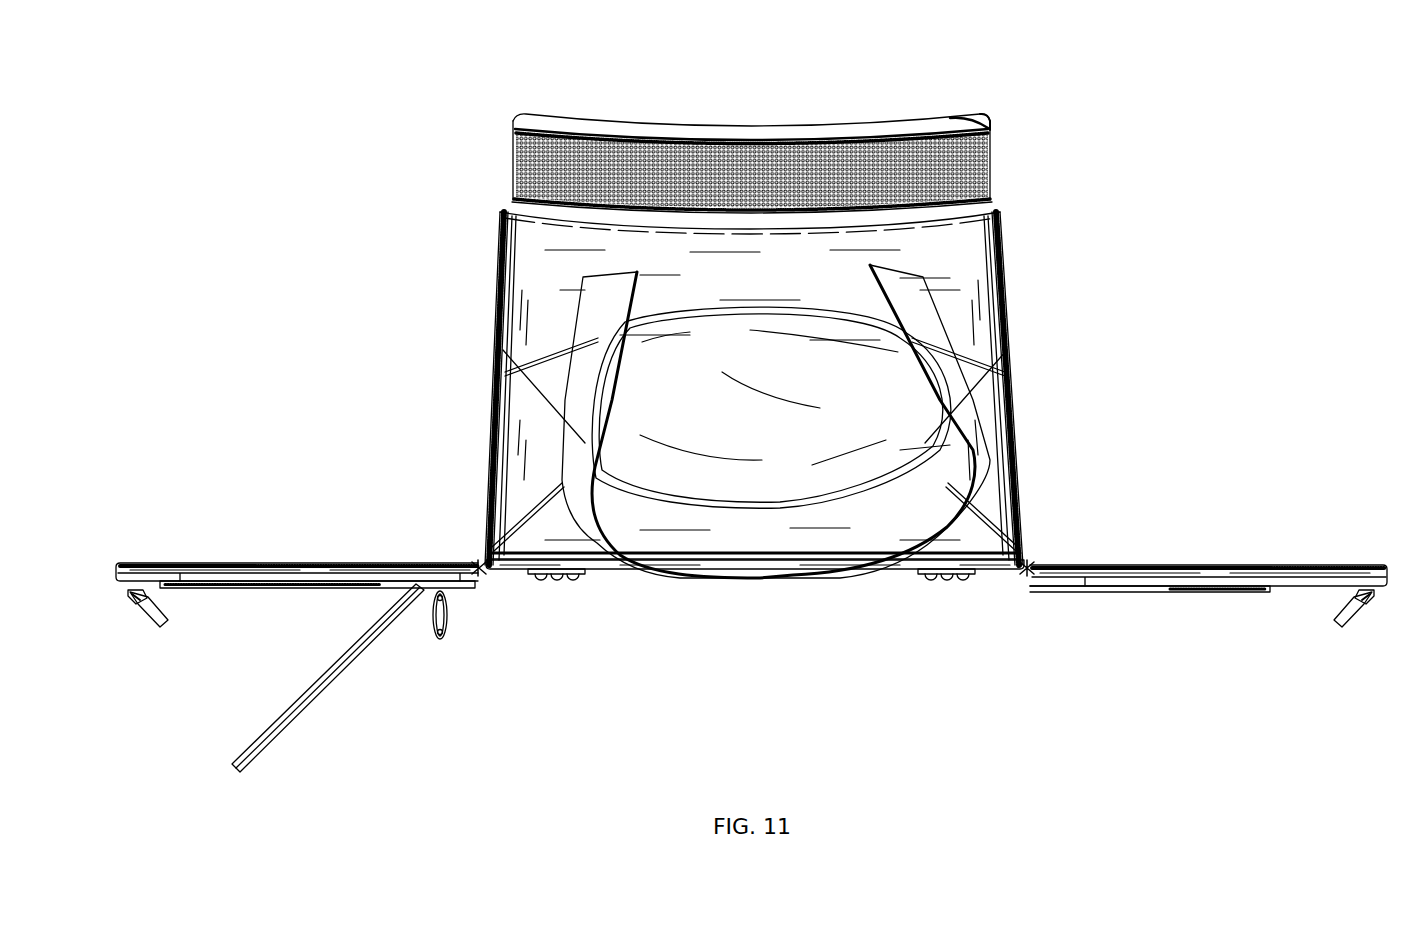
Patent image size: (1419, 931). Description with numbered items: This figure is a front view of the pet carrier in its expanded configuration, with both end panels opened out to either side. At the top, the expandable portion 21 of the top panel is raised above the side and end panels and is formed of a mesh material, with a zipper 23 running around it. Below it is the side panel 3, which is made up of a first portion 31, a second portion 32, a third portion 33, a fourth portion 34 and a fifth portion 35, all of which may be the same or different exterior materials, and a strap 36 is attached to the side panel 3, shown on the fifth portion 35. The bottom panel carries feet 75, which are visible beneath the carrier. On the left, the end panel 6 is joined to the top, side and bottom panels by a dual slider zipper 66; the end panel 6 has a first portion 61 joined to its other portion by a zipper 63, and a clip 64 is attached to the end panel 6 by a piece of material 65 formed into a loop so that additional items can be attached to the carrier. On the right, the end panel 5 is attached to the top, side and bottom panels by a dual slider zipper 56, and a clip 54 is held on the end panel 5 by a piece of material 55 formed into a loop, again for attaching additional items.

The expandable portion 21 is at (891, 128).
The zipper 23 is at (990, 127).
The side panel 3 is at (970, 290).
The first portion 31 is at (550, 381).
The second portion 32 is at (518, 444).
The third portion 33 is at (832, 535).
The fourth portion 34 is at (990, 404).
The fifth portion 35 is at (966, 258).
The strap 36 is at (641, 566).
The feet 75 is at (555, 578).
The zipper 66 is at (480, 562).
The zipper 56 is at (1029, 566).
The end panel 6 is at (462, 584).
The clip 64 is at (152, 606).
The piece of material 65 is at (132, 602).
The zipper 63 is at (437, 640).
The first portion 61 is at (272, 740).
The end panel 5 is at (1302, 592).
The clip 54 is at (1334, 625).
The piece of material 55 is at (1375, 604).